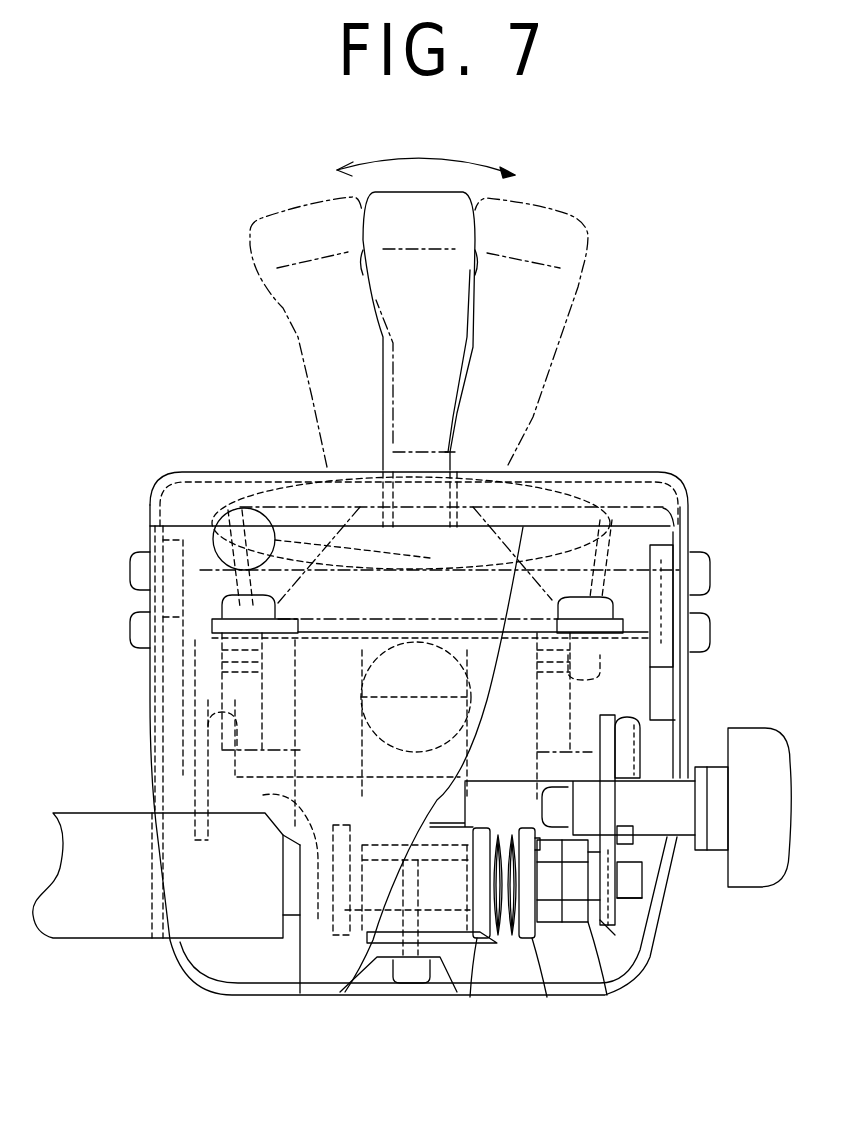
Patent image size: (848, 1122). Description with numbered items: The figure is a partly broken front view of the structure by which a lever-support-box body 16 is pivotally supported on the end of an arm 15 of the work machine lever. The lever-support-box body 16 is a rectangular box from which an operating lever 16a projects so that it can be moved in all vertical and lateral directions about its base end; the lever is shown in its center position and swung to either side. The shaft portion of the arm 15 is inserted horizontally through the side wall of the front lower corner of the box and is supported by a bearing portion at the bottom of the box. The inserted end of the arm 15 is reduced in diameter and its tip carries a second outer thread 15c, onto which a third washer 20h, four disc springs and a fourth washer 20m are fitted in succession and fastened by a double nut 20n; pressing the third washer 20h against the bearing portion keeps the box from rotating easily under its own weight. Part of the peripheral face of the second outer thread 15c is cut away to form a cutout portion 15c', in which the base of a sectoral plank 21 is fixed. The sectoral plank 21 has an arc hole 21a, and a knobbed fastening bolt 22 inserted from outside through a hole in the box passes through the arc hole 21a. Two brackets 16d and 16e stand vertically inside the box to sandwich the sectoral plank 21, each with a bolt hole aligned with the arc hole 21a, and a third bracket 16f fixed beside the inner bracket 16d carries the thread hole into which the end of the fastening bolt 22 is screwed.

The arm 15 is at (95, 928).
The second outer thread 15c is at (702, 892).
The cutout portion 15c' is at (698, 945).
The lever-support-box body 16 is at (618, 468).
The operating lever 16a is at (578, 287).
The first bracket 16d is at (622, 790).
The second bracket 16e is at (583, 787).
The third bracket 16f is at (600, 700).
The third washer 20h is at (473, 940).
The fourth washer 20m is at (530, 940).
The double nut 20n is at (568, 922).
The sectoral plank 21 is at (643, 878).
The arc hole 21a is at (605, 927).
The fastening bolt 22 is at (705, 764).